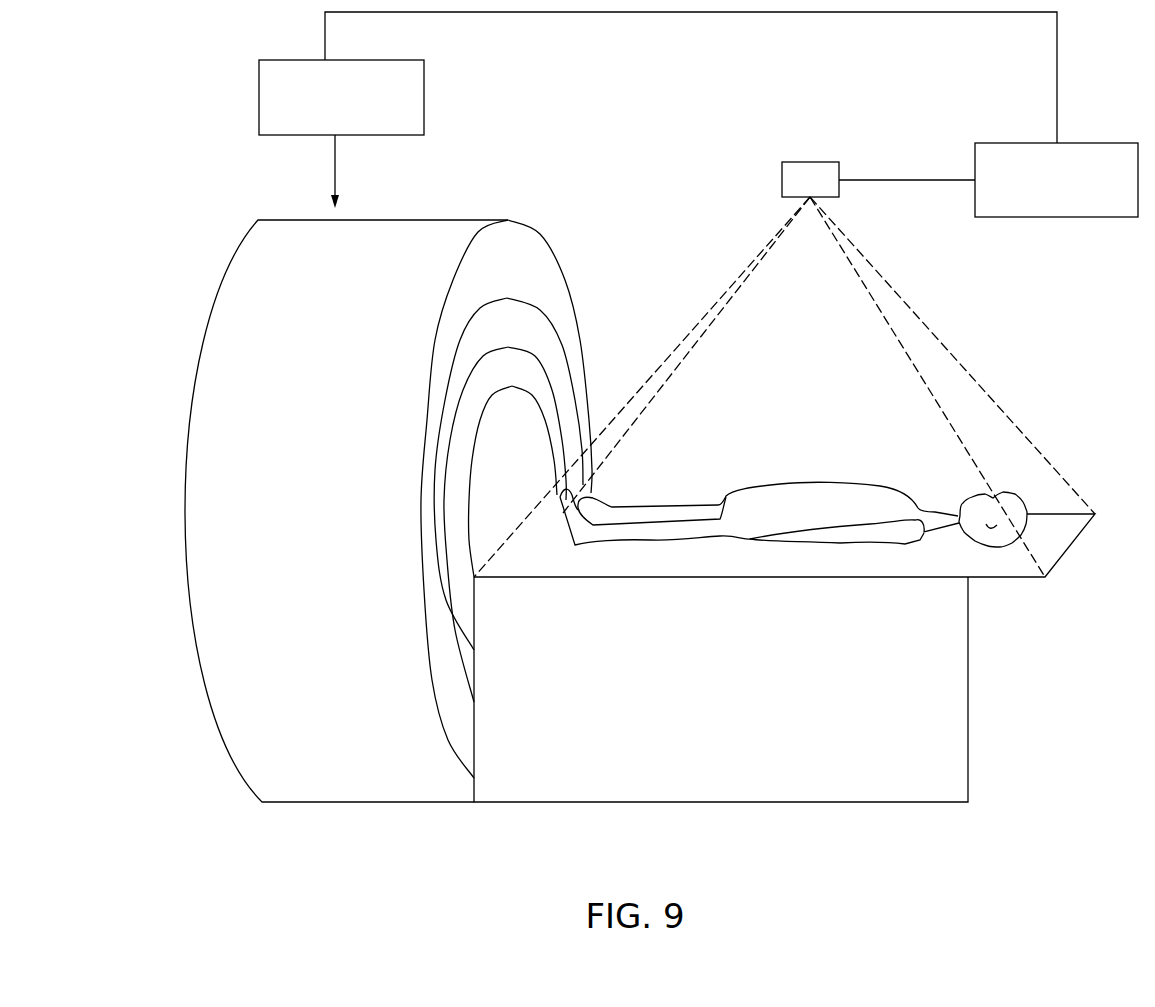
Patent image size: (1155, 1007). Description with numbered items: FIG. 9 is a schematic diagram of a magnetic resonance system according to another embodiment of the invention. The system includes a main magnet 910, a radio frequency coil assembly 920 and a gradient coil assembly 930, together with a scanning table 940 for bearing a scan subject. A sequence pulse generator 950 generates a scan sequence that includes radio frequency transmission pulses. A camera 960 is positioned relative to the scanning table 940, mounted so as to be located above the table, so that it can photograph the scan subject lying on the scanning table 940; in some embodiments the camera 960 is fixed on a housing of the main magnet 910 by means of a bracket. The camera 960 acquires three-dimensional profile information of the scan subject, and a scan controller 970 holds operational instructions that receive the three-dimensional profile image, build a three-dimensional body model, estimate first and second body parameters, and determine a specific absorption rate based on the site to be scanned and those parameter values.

The main magnet 910 is at (520, 387).
The radio frequency coil assembly 920 is at (498, 348).
The gradient coil assembly 930 is at (462, 340).
The scanning table 940 is at (1065, 555).
The sequence pulse generator 950 is at (259, 82).
The camera 960 is at (803, 175).
The scan controller 970 is at (1080, 217).